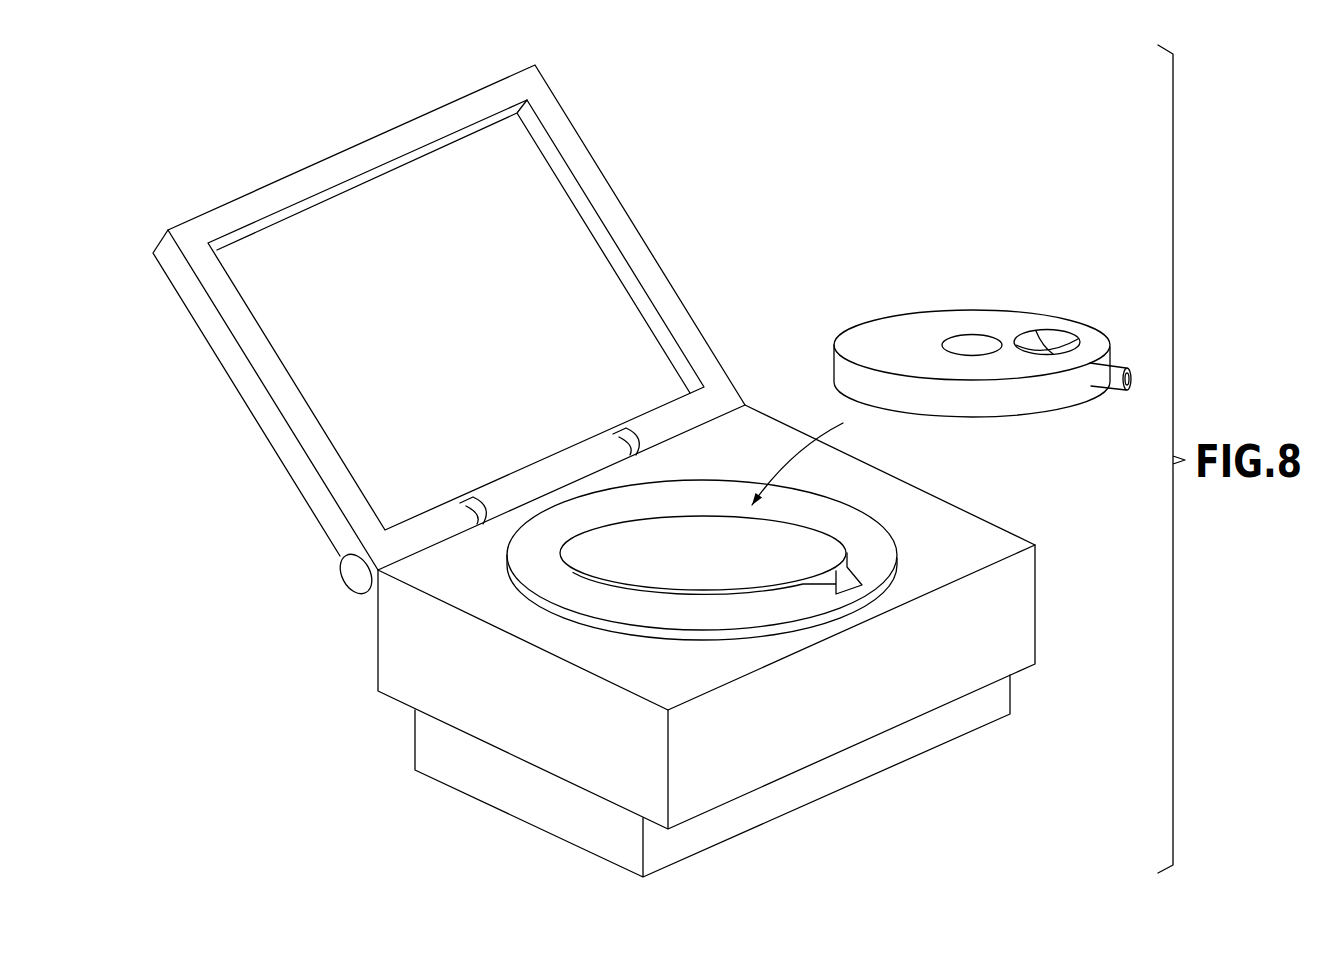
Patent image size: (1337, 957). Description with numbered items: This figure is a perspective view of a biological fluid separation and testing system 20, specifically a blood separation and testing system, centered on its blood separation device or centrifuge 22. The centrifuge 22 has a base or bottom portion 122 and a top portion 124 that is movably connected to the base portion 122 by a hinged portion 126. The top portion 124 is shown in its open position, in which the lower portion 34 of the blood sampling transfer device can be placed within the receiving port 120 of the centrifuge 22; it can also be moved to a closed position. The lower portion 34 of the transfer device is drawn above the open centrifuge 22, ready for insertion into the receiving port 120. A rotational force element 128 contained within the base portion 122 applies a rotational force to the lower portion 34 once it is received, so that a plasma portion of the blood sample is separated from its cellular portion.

The biological fluid separation and testing system 20 is at (832, 166).
The centrifuge 22 is at (1010, 625).
The lower portion 34 is at (907, 333).
The receiving port 120 is at (668, 572).
The base portion 122 is at (407, 675).
The top portion 124 is at (602, 168).
The hinged portion 126 is at (355, 583).
The rotational force element 128 is at (867, 550).